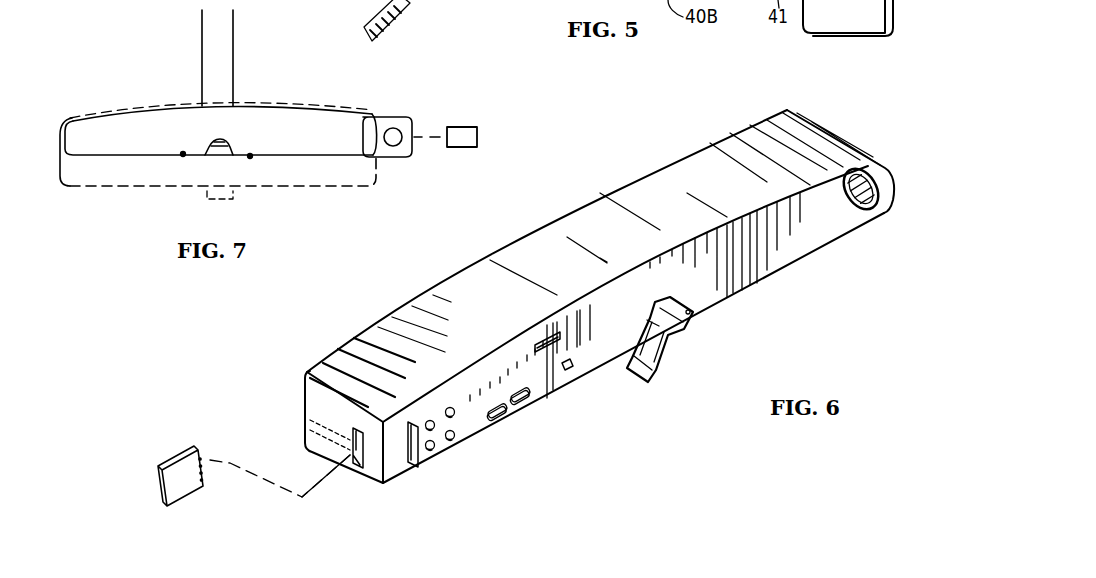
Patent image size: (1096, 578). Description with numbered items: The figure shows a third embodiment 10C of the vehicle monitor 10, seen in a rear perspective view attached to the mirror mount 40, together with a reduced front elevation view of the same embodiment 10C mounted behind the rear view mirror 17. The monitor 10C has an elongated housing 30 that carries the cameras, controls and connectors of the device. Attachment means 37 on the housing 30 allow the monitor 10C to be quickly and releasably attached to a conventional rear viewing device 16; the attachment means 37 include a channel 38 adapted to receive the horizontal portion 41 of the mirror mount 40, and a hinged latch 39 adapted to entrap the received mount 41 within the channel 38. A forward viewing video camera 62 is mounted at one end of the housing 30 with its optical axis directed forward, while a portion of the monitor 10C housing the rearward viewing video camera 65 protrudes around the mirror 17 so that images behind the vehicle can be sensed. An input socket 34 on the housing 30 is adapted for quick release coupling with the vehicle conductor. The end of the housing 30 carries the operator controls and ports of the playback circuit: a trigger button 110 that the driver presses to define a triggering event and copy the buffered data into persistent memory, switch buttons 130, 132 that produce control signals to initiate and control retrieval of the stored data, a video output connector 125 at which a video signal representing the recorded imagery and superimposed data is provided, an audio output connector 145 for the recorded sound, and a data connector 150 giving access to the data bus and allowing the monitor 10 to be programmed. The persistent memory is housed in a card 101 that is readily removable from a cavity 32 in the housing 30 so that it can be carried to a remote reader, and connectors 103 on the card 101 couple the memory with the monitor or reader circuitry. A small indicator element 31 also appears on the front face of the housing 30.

In FIG. 6, the monitor 10 is at (437, 276).
In FIG. 7, the third embodiment of monitor 10C is at (165, 90).
In FIG. 6, the third embodiment of monitor 10C is at (457, 251).
In FIG. 7, the rear viewing device 16 is at (251, 74).
In FIG. 7, the mirror 17 is at (151, 172).
In FIG. 7, the housing 30 is at (366, 110).
In FIG. 6, the housing 30 is at (540, 242).
In FIG. 6, the indicator 31 is at (566, 372).
In FIG. 6, the cavity 32 is at (355, 470).
In FIG. 6, the input socket 34 is at (558, 330).
In FIG. 6, the attachment means 37 is at (668, 380).
In FIG. 6, the channel 38 is at (681, 300).
In FIG. 6, the hinged latch 39 is at (661, 341).
In FIG. 7, the mirror mount 40 is at (218, 42).
In FIG. 7, the horizontal portion of mount 41 is at (220, 137).
In FIG. 6, the forward viewing video camera 62 is at (865, 211).
In FIG. 7, the rearward viewing video camera 65 is at (402, 130).
In FIG. 6, the rearward viewing video camera 65 is at (337, 345).
In FIG. 7, the card 101 is at (478, 135).
In FIG. 6, the card 101 is at (184, 458).
In FIG. 6, the connectors 103 is at (210, 457).
In FIG. 6, the trigger button 110 is at (423, 468).
In FIG. 6, the video output connector 125 is at (470, 397).
In FIG. 6, the switch button 130 is at (448, 408).
In FIG. 6, the switch button 132 is at (431, 450).
In FIG. 6, the audio output connector 145 is at (454, 439).
In FIG. 6, the data connector 150 is at (513, 416).